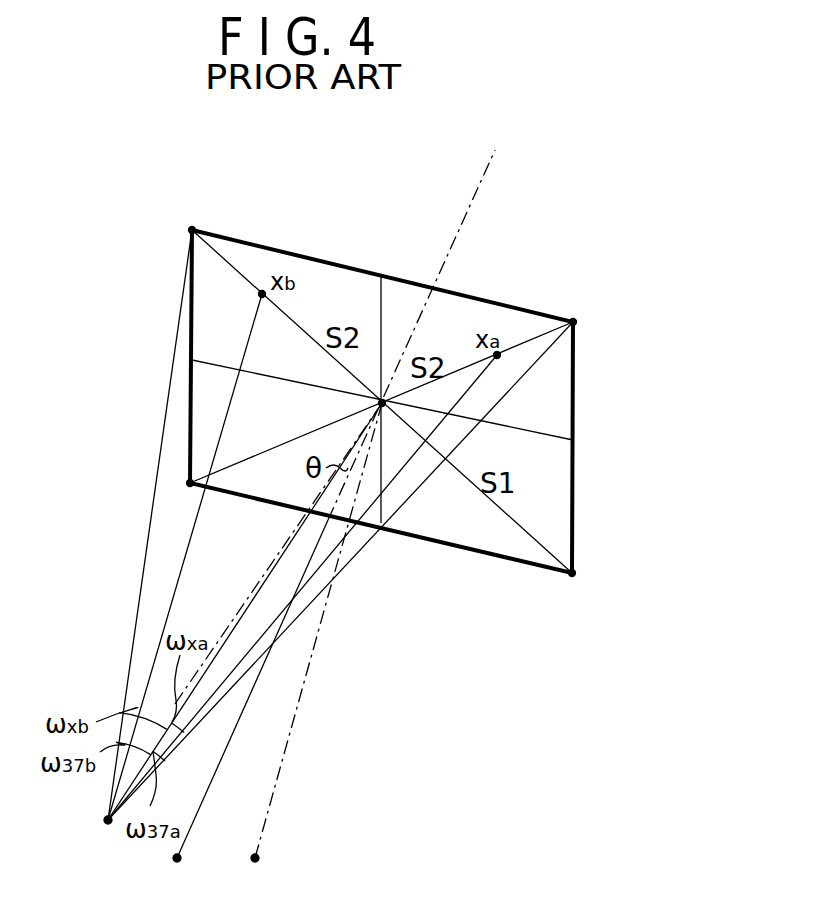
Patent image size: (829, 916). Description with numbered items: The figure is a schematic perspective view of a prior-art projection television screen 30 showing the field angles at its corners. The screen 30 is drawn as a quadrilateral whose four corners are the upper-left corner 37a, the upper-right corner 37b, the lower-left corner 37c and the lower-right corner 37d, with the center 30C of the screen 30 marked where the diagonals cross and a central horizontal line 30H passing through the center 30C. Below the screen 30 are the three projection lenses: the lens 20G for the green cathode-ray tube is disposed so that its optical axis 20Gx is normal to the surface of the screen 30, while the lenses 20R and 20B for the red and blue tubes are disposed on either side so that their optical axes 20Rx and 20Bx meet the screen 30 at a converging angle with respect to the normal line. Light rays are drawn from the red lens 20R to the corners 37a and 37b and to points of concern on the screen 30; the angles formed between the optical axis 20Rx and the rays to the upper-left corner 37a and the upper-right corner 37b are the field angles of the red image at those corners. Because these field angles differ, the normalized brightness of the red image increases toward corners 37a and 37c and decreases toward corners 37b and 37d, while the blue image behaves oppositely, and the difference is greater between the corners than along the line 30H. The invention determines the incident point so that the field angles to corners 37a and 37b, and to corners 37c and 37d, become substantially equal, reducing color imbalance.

The screen 30 is at (576, 470).
The center of the screen 30C is at (377, 405).
The central horizontal line 30H is at (562, 438).
The upper-left corner 37a is at (573, 321).
The upper-right corner 37b is at (192, 229).
The lower-left corner 37c is at (572, 575).
The lower-right corner 37d is at (189, 483).
The lens for the red cathode-ray tube 20R is at (109, 823).
The lens for the green cathode-ray tube 20G is at (177, 860).
The lens for the blue cathode-ray tube 20B is at (255, 860).
The optical axis of the red lens 20Rx is at (248, 600).
The optical axis of the green lens 20Gx is at (218, 752).
The optical axis of the blue lens 20Bx is at (318, 632).